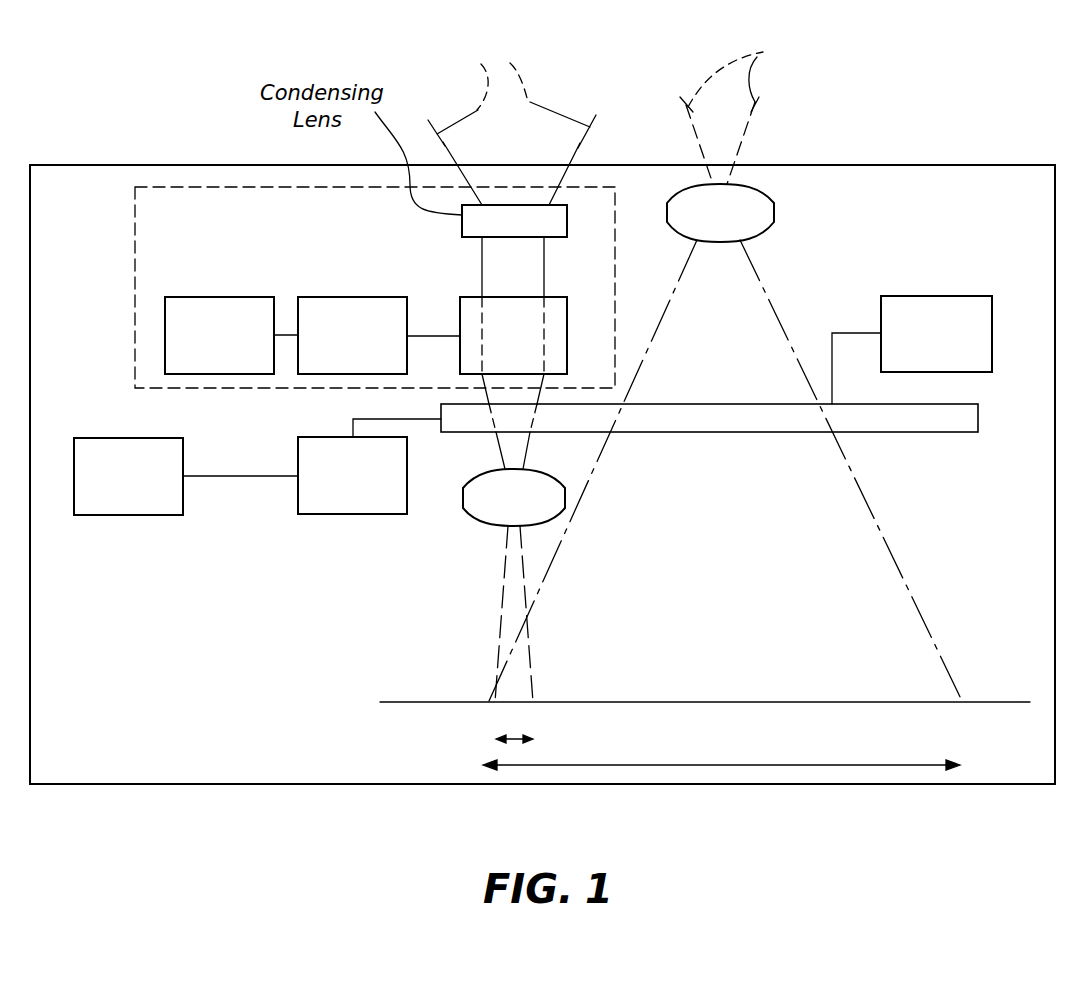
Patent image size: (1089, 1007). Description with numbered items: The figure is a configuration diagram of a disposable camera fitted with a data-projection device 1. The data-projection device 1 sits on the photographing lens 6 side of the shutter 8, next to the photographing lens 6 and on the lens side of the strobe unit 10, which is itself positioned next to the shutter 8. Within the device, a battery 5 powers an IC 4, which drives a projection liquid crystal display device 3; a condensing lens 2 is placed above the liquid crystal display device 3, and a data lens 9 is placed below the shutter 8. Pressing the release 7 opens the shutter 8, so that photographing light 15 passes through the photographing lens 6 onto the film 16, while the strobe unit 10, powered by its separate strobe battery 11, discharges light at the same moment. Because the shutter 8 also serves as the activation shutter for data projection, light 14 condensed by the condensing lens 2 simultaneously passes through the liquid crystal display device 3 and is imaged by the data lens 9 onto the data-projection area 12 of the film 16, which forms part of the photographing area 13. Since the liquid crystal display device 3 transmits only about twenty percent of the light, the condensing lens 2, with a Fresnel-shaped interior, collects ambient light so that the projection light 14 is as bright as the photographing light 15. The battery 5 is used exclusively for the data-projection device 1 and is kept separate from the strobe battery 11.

The data-projection device 1 is at (267, 187).
The condensing lens 2 is at (462, 234).
The projection liquid crystal display device 3 is at (567, 311).
The IC 4 is at (376, 297).
The battery 5 is at (202, 297).
The photographing lens 6 is at (680, 233).
The release 7 is at (880, 320).
The shutter 8 is at (650, 433).
The data lens 9 is at (475, 510).
The strobe unit 10 is at (318, 514).
The strobe battery 11 is at (96, 515).
The data-projection area 12 is at (513, 740).
The photographing area 13 is at (723, 765).
The light 14 is at (500, 62).
The photographing light 15 is at (757, 60).
The film 16 is at (762, 702).